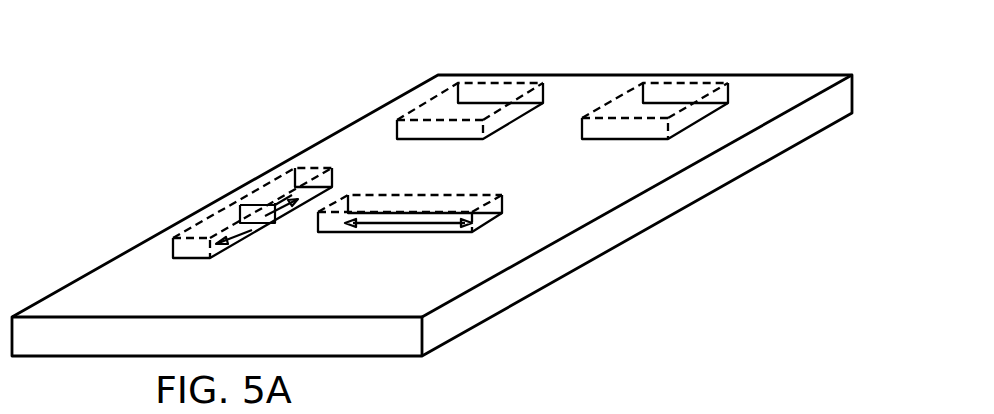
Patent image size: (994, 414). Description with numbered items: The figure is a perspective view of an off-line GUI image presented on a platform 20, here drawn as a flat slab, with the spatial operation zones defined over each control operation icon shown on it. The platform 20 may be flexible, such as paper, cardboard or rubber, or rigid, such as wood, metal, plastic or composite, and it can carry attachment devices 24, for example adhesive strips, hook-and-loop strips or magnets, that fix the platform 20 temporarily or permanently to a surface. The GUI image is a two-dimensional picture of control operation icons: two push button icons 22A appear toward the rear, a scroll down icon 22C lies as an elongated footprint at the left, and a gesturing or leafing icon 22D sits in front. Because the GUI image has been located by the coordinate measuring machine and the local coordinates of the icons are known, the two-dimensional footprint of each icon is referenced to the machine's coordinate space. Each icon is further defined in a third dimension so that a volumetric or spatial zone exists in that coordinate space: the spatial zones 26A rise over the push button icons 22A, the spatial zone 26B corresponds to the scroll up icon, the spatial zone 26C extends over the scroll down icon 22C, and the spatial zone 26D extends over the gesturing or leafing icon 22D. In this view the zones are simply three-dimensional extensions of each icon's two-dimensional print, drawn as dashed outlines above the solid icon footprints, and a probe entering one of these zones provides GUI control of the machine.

The platform 20 is at (714, 168).
The push button icons 22A is at (557, 144).
The scroll down icon 22C is at (185, 175).
The gesturing or leafing icon 22D is at (539, 279).
The attachment devices 24 is at (29, 9).
The spatial zones 26A is at (397, 128).
The spatial zone 26B is at (267, 180).
The spatial zone 26C is at (192, 213).
The spatial zone 26D is at (505, 205).